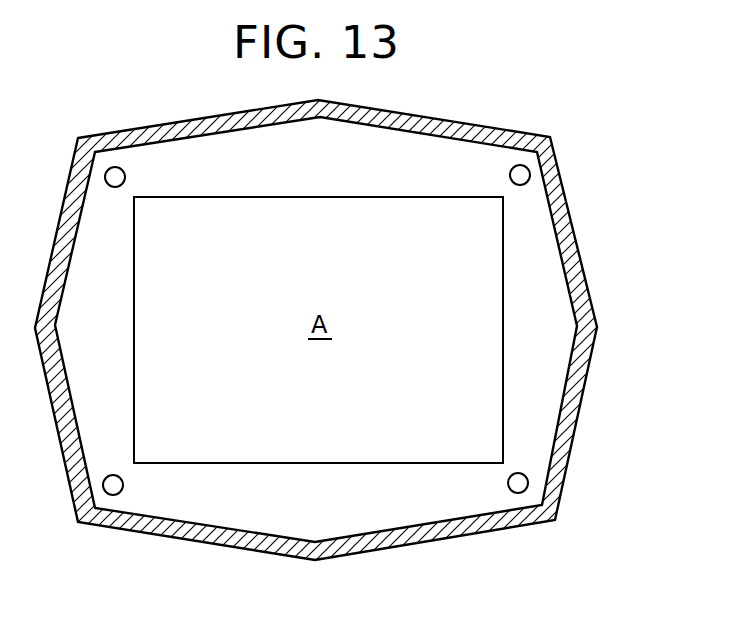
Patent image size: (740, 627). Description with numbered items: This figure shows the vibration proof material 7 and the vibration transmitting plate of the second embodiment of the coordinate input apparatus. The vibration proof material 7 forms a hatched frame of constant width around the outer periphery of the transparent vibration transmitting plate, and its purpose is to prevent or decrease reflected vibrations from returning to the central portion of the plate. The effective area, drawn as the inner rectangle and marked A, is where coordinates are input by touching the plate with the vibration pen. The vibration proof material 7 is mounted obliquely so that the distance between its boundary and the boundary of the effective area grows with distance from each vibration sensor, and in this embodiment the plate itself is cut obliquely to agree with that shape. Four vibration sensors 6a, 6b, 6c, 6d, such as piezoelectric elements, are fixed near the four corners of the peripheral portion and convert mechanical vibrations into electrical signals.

The vibration proof material 7 is at (577, 427).
The vibration sensor 6a is at (109, 167).
The vibration sensor 6b is at (526, 166).
The vibration sensor 6c is at (107, 494).
The vibration sensor 6d is at (525, 490).